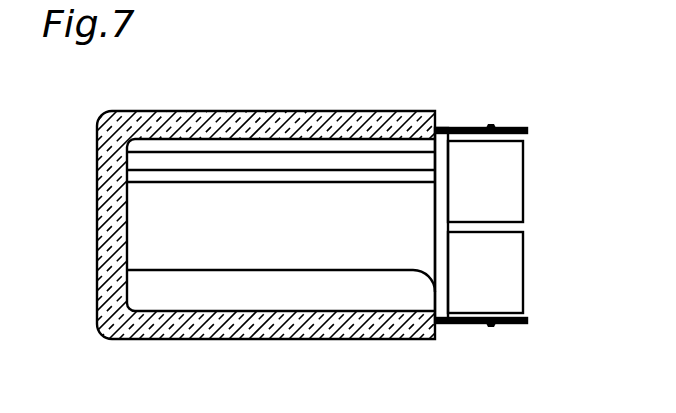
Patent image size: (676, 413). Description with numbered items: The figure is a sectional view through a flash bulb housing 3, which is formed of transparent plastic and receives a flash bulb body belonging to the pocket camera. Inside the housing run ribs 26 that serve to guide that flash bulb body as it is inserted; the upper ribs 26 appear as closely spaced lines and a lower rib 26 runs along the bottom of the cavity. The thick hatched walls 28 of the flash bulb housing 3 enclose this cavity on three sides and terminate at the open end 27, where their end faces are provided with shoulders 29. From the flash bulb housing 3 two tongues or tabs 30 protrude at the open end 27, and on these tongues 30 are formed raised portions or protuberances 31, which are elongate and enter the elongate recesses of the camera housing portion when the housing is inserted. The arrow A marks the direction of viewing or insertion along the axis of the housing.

The flash bulb housing 3 is at (155, 100).
The ribs 26 is at (208, 170).
The open end 27 is at (507, 208).
The walls 28 is at (385, 111).
The shoulders 29 is at (437, 127).
The tongues or tabs 30 is at (508, 174).
The raised portions or protuberances 31 is at (491, 125).
The direction of insertion A is at (316, 92).